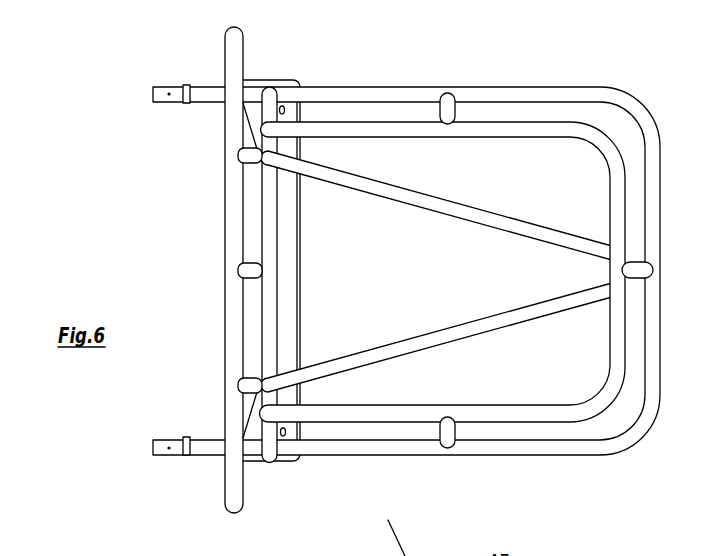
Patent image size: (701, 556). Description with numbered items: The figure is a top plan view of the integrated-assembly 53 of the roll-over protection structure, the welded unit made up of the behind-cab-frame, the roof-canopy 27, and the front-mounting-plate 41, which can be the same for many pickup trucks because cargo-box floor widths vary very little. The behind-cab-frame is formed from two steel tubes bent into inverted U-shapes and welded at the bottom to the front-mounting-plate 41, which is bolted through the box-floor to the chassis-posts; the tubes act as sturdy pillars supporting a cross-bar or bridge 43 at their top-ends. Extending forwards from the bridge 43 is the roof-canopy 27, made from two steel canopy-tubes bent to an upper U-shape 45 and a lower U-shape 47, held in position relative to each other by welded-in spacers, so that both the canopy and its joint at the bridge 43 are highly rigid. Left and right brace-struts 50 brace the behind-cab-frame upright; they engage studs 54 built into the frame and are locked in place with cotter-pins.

The roof-canopy 27 is at (391, 274).
The front-mounting-plate 41 is at (287, 281).
The bridge 43 is at (247, 251).
The upper U-shape canopy-tube 45 is at (518, 123).
The lower U-shape canopy-tube 47 is at (391, 300).
The brace-struts 50 is at (450, 110).
The integrated-assembly 53 is at (268, 323).
The studs 54 is at (161, 97).